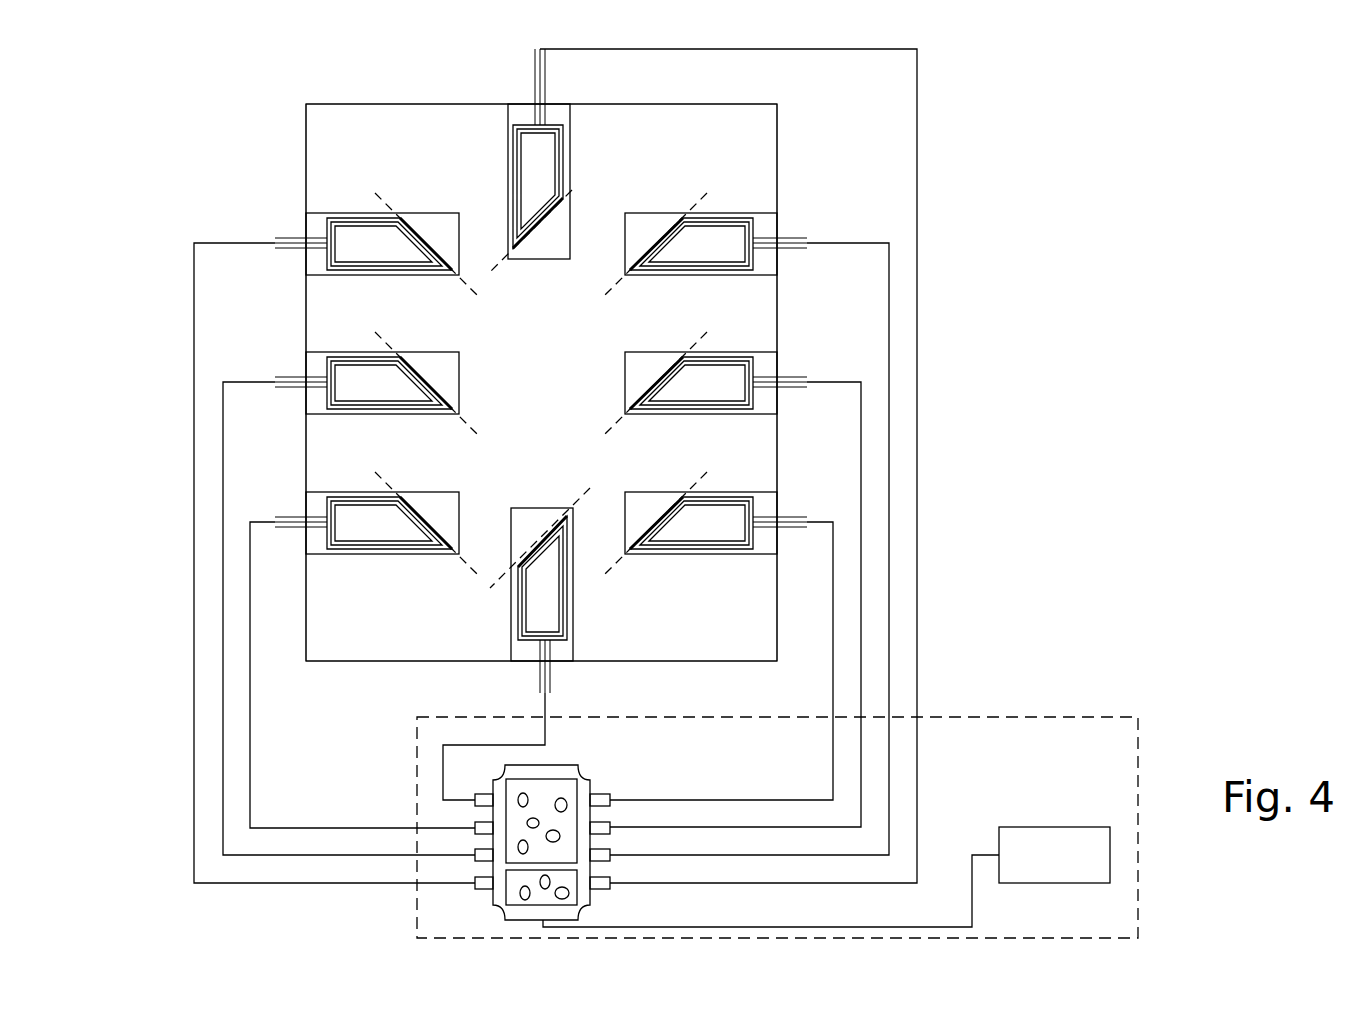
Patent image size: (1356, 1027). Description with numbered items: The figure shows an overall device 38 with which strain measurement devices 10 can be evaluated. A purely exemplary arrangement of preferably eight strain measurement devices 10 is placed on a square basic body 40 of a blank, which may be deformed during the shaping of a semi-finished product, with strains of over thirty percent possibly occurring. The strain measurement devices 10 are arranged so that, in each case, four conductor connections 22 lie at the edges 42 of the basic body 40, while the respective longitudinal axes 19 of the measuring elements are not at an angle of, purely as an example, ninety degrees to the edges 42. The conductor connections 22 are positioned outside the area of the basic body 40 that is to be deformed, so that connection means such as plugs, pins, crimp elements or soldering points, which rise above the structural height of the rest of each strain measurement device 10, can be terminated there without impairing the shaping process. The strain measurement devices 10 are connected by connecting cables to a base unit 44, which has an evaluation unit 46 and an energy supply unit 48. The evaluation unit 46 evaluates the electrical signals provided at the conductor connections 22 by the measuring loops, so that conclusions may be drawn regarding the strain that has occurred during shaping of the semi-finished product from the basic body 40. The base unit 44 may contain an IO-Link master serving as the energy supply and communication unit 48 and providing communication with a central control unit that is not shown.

The strain measurement device 10 is at (315, 224).
The longitudinal axis 19 is at (383, 203).
The conductor connection 22 is at (275, 242).
The overall device 38 is at (1108, 281).
The basic body 40 is at (723, 132).
The edge 42 is at (346, 101).
The base unit 44 is at (1052, 717).
The evaluation unit 46 is at (560, 763).
The energy supply unit 48 is at (1063, 827).